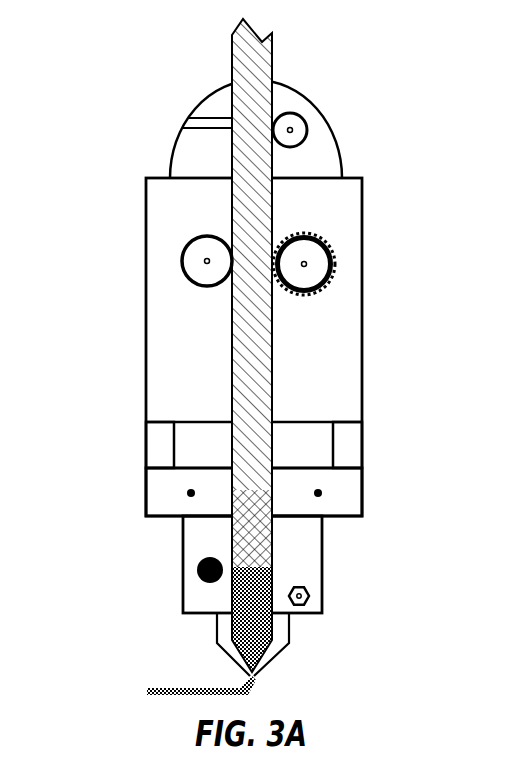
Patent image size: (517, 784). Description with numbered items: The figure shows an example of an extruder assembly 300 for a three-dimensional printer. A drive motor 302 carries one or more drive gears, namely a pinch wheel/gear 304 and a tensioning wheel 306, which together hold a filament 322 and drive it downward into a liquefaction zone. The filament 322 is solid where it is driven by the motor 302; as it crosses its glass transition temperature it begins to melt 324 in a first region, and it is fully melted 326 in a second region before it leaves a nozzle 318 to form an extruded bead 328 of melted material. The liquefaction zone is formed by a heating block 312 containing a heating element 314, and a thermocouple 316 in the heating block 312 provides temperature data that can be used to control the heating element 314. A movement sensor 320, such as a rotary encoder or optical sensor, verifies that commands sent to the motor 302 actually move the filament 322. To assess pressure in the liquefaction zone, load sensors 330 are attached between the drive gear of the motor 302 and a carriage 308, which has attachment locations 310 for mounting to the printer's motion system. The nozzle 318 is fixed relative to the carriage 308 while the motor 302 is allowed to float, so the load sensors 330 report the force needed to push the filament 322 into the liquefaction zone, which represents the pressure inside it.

The extruder assembly 300 is at (113, 49).
The drive motor 302 is at (362, 353).
The pinch wheel/gear 304 is at (337, 258).
The tensioning wheel 306 is at (183, 253).
The carriage 308 is at (362, 486).
The attachment locations 310 is at (191, 493).
The heating block 312 is at (322, 548).
The heating element 314 is at (197, 572).
The thermocouple 316 is at (309, 596).
The nozzle 318 is at (283, 657).
The movement sensor 320 is at (306, 123).
The filament 322 is at (235, 57).
The melting region 324 is at (243, 526).
The fully melted region 326 is at (257, 603).
The extruded bead 328 is at (185, 688).
The load sensors 330 is at (146, 440).